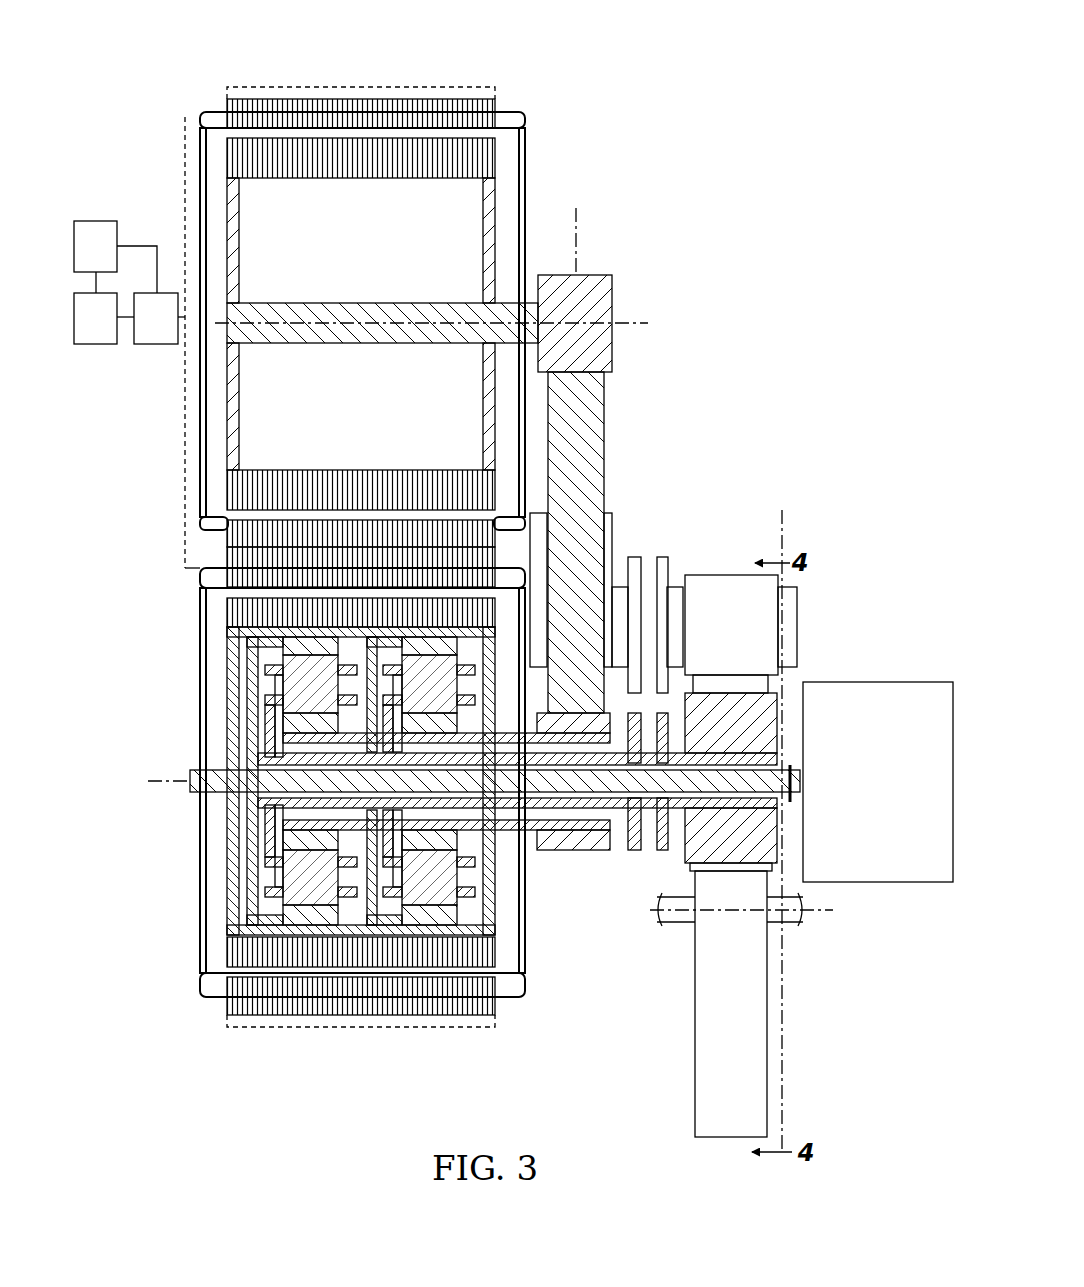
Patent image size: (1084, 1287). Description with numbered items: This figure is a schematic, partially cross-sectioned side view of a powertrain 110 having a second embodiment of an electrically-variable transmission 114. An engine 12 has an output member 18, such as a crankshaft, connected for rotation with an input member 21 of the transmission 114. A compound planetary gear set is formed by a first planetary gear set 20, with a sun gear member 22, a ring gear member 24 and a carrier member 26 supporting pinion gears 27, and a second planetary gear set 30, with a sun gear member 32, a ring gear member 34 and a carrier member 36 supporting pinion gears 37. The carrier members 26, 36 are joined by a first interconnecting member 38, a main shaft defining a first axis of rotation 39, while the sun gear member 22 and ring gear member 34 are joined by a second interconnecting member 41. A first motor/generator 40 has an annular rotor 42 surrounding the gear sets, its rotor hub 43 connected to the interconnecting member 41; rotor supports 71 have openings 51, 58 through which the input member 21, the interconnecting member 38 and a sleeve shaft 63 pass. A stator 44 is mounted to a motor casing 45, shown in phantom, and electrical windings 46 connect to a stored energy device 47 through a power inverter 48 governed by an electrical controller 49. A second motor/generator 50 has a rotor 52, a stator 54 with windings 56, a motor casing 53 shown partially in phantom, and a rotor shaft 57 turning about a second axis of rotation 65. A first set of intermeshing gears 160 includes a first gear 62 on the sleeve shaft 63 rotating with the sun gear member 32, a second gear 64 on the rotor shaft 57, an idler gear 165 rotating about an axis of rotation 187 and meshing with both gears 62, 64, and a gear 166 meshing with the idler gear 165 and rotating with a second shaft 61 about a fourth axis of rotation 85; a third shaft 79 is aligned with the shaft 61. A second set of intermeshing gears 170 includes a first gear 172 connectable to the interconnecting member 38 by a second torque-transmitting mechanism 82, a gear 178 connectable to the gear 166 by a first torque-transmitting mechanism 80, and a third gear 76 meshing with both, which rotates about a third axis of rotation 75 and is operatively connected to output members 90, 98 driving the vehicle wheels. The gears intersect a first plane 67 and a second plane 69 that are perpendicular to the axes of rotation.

The engine 12 is at (878, 782).
The output member 18 is at (792, 767).
The first planetary gear set 20 is at (350, 912).
The input member 21 is at (668, 818).
The sun gear member 22 is at (268, 730).
The ring gear member 24 is at (238, 650).
The carrier member 26 is at (265, 668).
The pinion gears 27 is at (310, 781).
The second planetary gear set 30 is at (468, 912).
The sun gear member 32 is at (457, 858).
The ring gear member 34 is at (430, 925).
The carrier member 36 is at (388, 895).
The pinion gears 37 is at (429, 781).
The first interconnecting member 38 is at (260, 758).
The first axis of rotation 39 is at (157, 780).
The first motor/generator 40 is at (214, 1009).
The second interconnecting member 41 is at (365, 648).
The annular rotor 42 is at (232, 962).
The rotor hub 43 is at (385, 665).
The stator 44 is at (280, 1015).
The motor casing 45 is at (340, 1028).
The electrical windings 46 is at (200, 578).
The stored energy device 47 is at (95, 246).
The power inverter 48 is at (156, 318).
The electrical controller 49 is at (95, 318).
The second motor/generator 50 is at (486, 51).
The opening 51 is at (230, 808).
The rotor 52 is at (352, 180).
The motor casing 53 is at (375, 87).
The stator 54 is at (275, 99).
The electrical windings 56 is at (210, 110).
The rotor shaft 57 is at (533, 290).
The opening 58 is at (510, 715).
The second shaft 61 is at (628, 572).
The first gear 62 is at (597, 850).
The sleeve shaft 63 is at (520, 832).
The second gear 64 is at (575, 323).
The second axis of rotation 65 is at (645, 322).
The first plane 67 is at (578, 208).
The second plane 69 is at (780, 525).
The rotor supports 71 is at (497, 665).
The third axis of rotation 75 is at (833, 910).
The third gear 76 is at (731, 1004).
The third shaft 79 is at (668, 565).
The first torque-transmitting mechanism 80 is at (657, 544).
The second torque-transmitting mechanism 82 is at (655, 866).
The fourth axis of rotation 85 is at (797, 625).
The output member 90 is at (800, 925).
The output member 98 is at (670, 925).
The powertrain 110 is at (618, 124).
The electrically-variable transmission 114 is at (745, 437).
The first set of intermeshing gears 160 is at (589, 906).
The idler gear 165 is at (605, 445).
The gear 166 is at (612, 525).
The second set of intermeshing gears 170 is at (724, 1152).
The first gear 172 is at (731, 723).
The gear 178 is at (731, 634).
The axis of rotation 187 is at (610, 525).